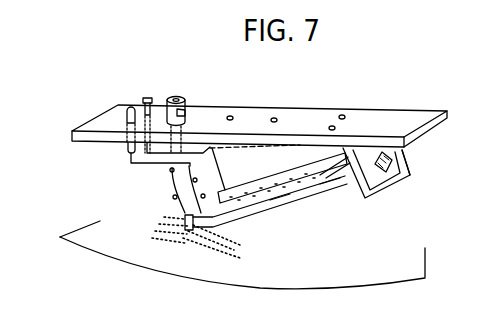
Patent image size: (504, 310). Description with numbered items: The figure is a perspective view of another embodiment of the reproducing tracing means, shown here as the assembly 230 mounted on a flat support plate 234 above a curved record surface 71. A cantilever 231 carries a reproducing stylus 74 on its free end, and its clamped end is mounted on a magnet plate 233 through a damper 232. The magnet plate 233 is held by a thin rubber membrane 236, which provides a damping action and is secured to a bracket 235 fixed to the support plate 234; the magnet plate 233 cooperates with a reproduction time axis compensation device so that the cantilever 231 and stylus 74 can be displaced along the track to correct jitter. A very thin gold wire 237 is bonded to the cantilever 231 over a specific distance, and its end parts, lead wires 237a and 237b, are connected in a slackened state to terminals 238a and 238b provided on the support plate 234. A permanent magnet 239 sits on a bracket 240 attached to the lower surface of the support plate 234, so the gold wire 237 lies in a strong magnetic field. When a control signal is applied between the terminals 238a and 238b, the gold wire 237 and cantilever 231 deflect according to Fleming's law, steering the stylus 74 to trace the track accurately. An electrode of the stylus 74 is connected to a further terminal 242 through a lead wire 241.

The web material 71 is at (95, 246).
The reproducing stylus 74 is at (170, 242).
The mounting assembly 230 is at (338, 80).
The cantilever 231 is at (283, 203).
The damper 232 is at (346, 180).
The magnet plate 233 is at (389, 165).
The support plate 234 is at (386, 114).
The bracket 235 is at (408, 157).
The thin rubber membrane 236 is at (383, 169).
The gold wire 237 is at (238, 203).
The lead wire 237a is at (332, 180).
The lead wire 237b is at (186, 216).
The terminal 238a is at (146, 97).
The terminal 238b is at (128, 110).
The permanent magnet 239 is at (297, 178).
The bracket 240 is at (240, 154).
The lead wire 241 is at (172, 183).
The terminal 242 is at (177, 96).